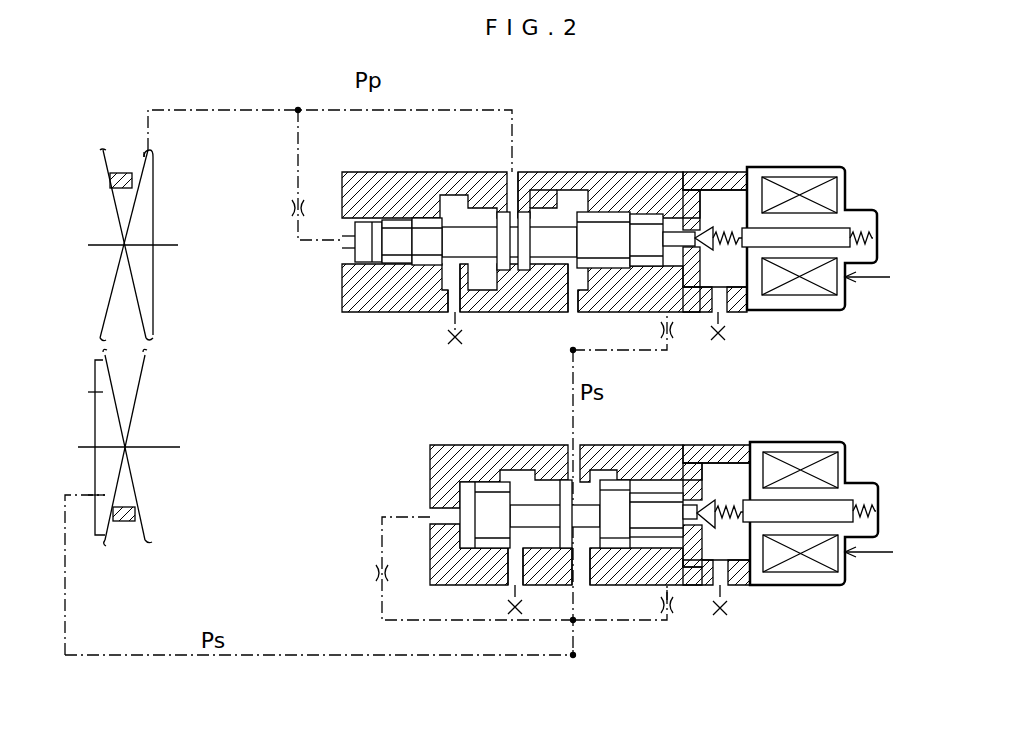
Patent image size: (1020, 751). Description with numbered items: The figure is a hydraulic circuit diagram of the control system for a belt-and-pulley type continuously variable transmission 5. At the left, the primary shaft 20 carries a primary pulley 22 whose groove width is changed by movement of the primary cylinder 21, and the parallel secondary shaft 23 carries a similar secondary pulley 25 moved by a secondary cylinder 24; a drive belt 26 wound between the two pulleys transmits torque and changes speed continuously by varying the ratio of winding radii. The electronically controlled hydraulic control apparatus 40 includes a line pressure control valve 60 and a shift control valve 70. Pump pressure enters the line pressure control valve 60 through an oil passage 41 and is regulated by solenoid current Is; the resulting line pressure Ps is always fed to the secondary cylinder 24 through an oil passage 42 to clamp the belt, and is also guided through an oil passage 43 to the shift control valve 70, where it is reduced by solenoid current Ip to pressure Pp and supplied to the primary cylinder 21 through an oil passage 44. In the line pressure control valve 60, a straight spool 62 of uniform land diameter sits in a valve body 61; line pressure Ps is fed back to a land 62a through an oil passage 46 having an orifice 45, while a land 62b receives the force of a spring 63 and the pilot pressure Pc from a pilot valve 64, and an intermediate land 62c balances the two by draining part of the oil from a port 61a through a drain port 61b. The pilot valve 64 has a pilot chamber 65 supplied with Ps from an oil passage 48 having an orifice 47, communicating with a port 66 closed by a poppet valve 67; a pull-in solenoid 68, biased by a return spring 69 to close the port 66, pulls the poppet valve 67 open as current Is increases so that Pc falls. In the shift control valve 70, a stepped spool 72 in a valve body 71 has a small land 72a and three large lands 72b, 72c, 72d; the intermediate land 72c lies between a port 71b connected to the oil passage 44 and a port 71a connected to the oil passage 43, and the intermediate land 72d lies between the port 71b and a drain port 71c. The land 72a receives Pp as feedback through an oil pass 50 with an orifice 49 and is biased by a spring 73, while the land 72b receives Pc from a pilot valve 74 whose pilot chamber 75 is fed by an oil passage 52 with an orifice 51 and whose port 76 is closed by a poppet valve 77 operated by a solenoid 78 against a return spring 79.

The belt-and-pulley type continuously variable transmission 5 is at (130, 221).
The primary shaft 20 is at (100, 248).
The primary cylinder 21 is at (153, 182).
The primary pulley 22 is at (110, 180).
The secondary shaft 23 is at (92, 447).
The secondary cylinder 24 is at (95, 392).
The secondary pulley 25 is at (140, 405).
The drive belt 26 is at (125, 522).
The electronically controlled hydraulic control apparatus 40 is at (672, 637).
The oil passage 41 is at (578, 658).
The oil passage 42 is at (148, 656).
The oil passage 43 is at (573, 408).
The oil passage 44 is at (236, 110).
The orifice 45 is at (372, 573).
The oil passage 46 is at (382, 612).
The orifice 47 is at (680, 606).
The oil passage 48 is at (630, 622).
The orifice 49 is at (284, 210).
The oil pass 50 is at (298, 168).
The orifice 51 is at (677, 338).
The oil passage 52 is at (660, 352).
The line pressure control valve 60 is at (609, 501).
The valve body 61 is at (430, 455).
The port 61a is at (590, 586).
The drain port 61b is at (530, 586).
The spool 62 is at (542, 514).
The land 62a is at (488, 550).
The land 62b is at (618, 488).
The intermediate land 62c is at (563, 500).
The spring 63 is at (655, 498).
The pilot valve 64 is at (835, 484).
The pilot chamber 65 is at (649, 607).
The port 66 is at (697, 476).
The poppet valve 67 is at (735, 513).
The solenoid 68 is at (830, 470).
The return spring 69 is at (872, 505).
The shift control valve 70 is at (586, 237).
The valve body 71 is at (382, 180).
The port 71a is at (565, 282).
The port 71b is at (525, 200).
The drain port 71c is at (470, 296).
The stepped spool 72 is at (506, 246).
The land 72a is at (430, 264).
The land 72b is at (605, 220).
The intermediate land 72c is at (524, 238).
The intermediate land 72d is at (500, 228).
The spring 73 is at (400, 262).
The pilot valve 74 is at (820, 213).
The pilot chamber 75 is at (640, 186).
The port 76 is at (690, 198).
The poppet valve 77 is at (725, 232).
The solenoid 78 is at (832, 195).
The return spring 79 is at (866, 225).